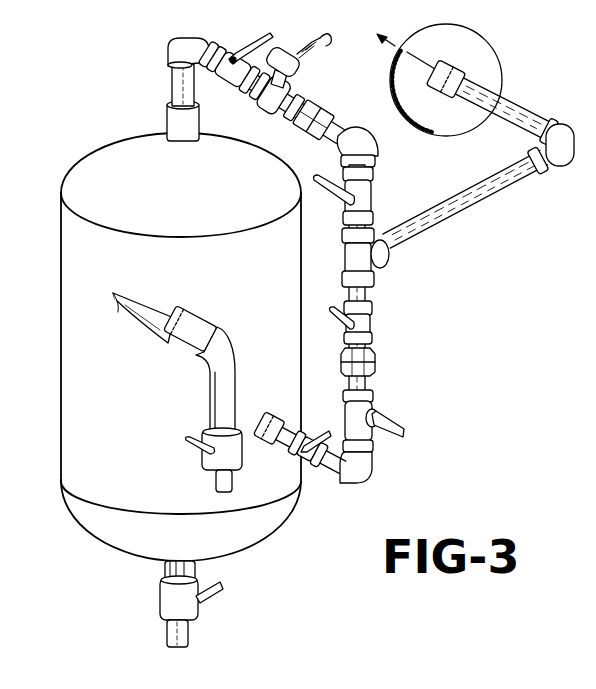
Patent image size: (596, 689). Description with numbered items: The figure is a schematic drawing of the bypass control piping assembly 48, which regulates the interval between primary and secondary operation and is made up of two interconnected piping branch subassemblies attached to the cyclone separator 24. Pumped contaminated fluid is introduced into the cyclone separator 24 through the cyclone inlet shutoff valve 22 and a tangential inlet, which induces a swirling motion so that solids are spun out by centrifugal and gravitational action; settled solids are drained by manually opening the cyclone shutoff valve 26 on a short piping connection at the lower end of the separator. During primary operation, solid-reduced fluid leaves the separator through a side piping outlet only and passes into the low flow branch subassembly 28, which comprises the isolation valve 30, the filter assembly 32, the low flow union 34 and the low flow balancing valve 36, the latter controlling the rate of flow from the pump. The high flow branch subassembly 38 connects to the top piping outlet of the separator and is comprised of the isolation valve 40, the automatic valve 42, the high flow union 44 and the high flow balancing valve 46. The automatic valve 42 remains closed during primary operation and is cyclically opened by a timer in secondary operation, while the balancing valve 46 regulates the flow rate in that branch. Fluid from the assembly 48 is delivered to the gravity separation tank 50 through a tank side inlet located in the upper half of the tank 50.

The cyclone inlet shutoff valve 22 is at (203, 430).
The cyclone separator 24 is at (110, 166).
The cyclone shutoff valve 26 is at (205, 605).
The low flow branch subassembly 28 is at (404, 459).
The isolation valve 30 is at (306, 470).
The filter assembly 32 is at (376, 406).
The low flow union 34 is at (376, 357).
The low flow balancing valve 36 is at (372, 304).
The high flow branch subassembly 38 is at (157, 77).
The isolation valve 40 is at (270, 35).
The automatic valve 42 is at (312, 46).
The high flow union 44 is at (338, 112).
The high flow balancing valve 46 is at (378, 198).
The bypass control piping assembly 48 is at (503, 221).
The gravity separation tank 50 is at (484, 61).